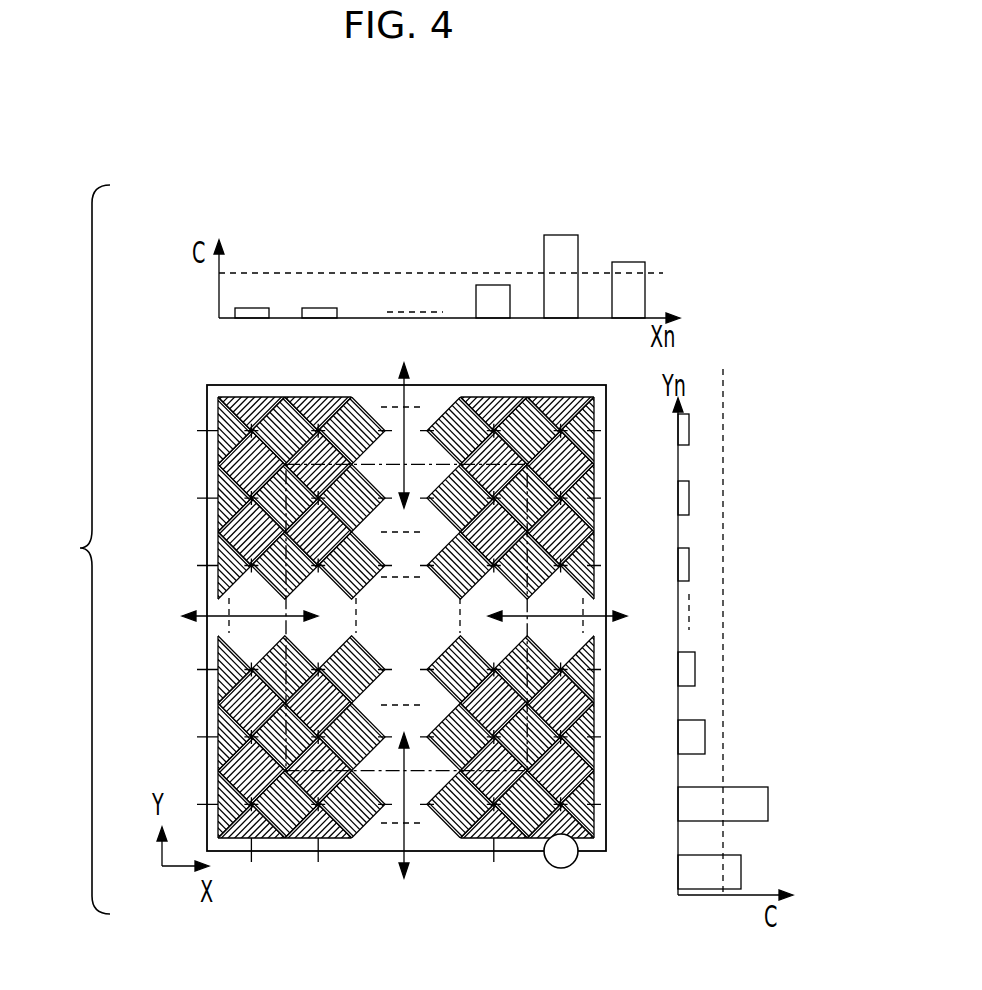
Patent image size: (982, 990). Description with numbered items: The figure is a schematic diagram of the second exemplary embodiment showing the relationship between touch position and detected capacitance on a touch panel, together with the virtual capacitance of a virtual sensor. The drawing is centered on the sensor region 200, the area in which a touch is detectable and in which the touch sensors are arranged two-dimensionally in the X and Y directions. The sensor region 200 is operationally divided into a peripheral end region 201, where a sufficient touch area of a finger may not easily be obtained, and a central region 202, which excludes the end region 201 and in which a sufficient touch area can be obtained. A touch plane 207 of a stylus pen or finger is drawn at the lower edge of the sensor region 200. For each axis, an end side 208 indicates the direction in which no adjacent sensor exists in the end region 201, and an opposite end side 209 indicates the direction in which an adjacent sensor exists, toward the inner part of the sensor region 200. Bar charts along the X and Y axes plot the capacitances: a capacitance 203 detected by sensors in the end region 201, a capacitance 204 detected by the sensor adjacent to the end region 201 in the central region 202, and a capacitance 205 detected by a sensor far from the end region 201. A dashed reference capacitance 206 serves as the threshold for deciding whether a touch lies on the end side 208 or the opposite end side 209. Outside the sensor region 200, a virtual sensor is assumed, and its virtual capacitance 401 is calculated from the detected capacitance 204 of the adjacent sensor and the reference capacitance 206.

The sensor region 200 is at (207, 468).
The end region 201 is at (240, 600).
The central region 202 is at (423, 637).
The capacitance 203 is at (251, 308).
The capacitance 204 is at (324, 308).
The capacitance 205 is at (689, 565).
The reference capacitance 206 is at (404, 272).
The touch plane 207 is at (561, 857).
The end side 208 is at (405, 392).
The opposite end side 209 is at (409, 462).
The virtual capacitance 401 is at (627, 265).